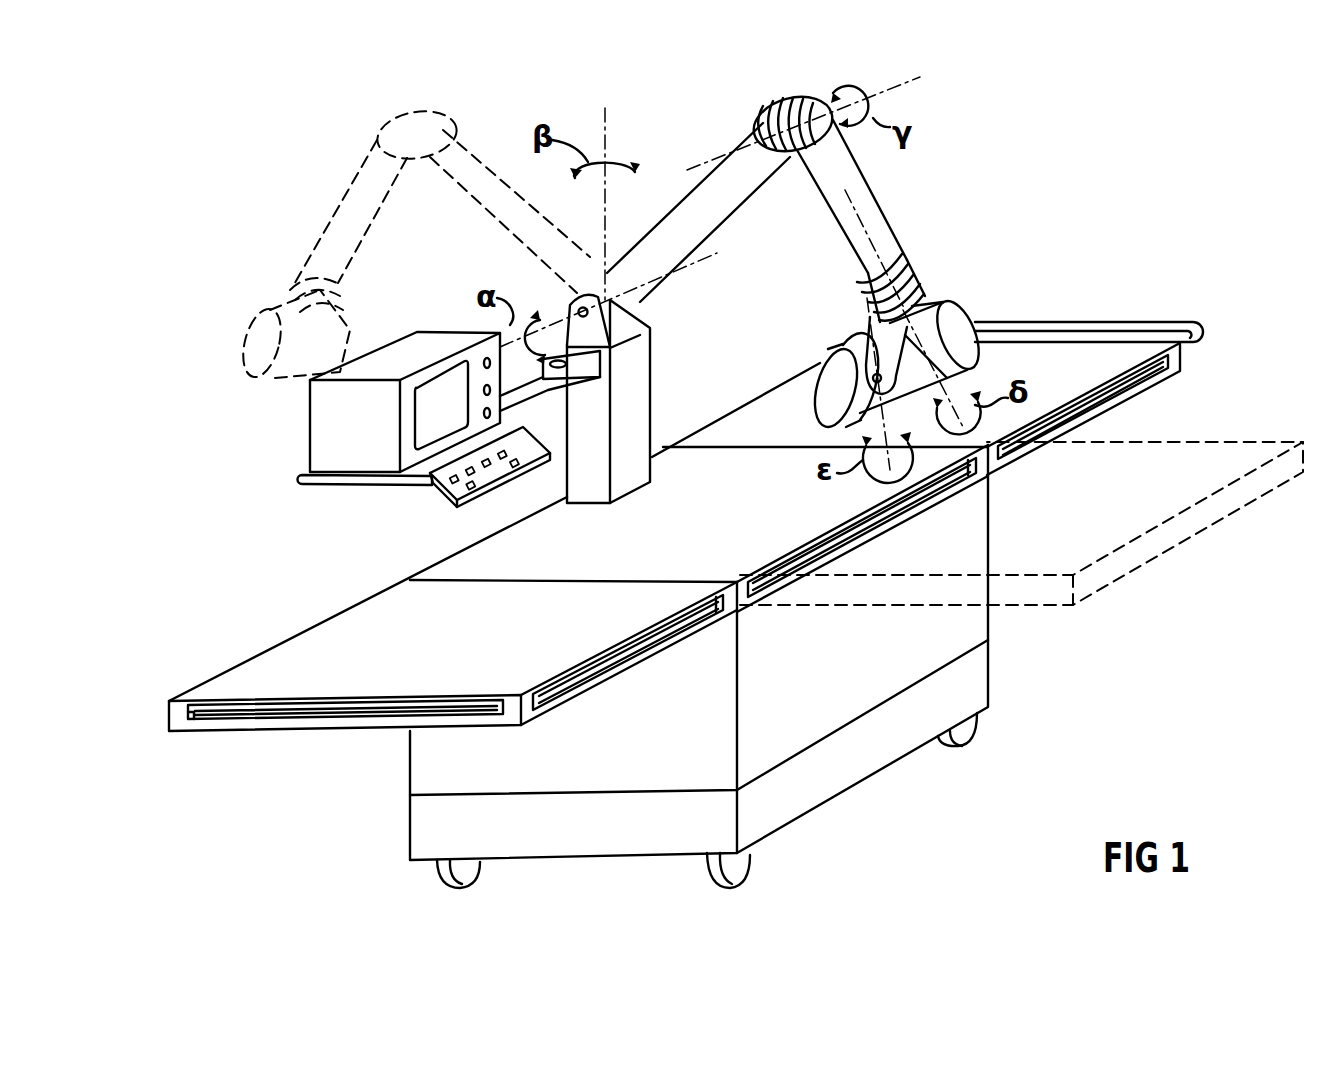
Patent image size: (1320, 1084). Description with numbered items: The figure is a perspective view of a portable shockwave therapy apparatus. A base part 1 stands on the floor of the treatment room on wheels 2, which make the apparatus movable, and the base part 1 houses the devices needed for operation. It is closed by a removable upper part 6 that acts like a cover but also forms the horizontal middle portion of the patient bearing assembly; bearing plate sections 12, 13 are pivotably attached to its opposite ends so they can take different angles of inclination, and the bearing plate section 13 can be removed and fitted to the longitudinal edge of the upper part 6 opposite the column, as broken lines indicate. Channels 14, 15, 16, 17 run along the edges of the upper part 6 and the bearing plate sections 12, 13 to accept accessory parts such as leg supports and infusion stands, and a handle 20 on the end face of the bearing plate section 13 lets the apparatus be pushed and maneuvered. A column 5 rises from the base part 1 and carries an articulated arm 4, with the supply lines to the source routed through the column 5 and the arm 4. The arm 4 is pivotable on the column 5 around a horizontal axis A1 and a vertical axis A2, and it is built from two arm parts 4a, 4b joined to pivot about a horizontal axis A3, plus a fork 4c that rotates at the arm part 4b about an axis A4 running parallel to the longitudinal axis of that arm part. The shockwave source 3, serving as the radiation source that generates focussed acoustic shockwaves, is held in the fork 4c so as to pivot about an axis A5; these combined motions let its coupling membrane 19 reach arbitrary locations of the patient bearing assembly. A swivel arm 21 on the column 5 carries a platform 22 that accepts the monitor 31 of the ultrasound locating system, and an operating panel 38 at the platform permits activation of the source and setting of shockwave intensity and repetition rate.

The base part 1 is at (970, 628).
The wheels 2 is at (465, 873).
The shockwave source 3 is at (950, 317).
The articulated arm 4 is at (779, 234).
The arm part 4a is at (684, 199).
The arm part 4b is at (873, 197).
The fork 4c is at (860, 350).
The column 5 is at (652, 382).
The upper part 6 is at (493, 560).
The bearing plate section 12 is at (453, 689).
The bearing plate section 13 is at (1104, 371).
The channel 14 is at (303, 712).
The channel 15 is at (600, 667).
The channel 16 is at (873, 523).
The channel 17 is at (1120, 390).
The coupling membrane 19 is at (815, 372).
The handle 20 is at (1170, 345).
The swivel arm 21 is at (524, 388).
The platform 22 is at (315, 480).
The monitor 31 is at (333, 425).
The operating panel 38 is at (443, 480).
The horizontal axis A1 is at (705, 252).
The vertical axis A2 is at (605, 120).
The horizontal axis A3 is at (913, 83).
The axis A4 is at (877, 246).
The axis A5 is at (865, 300).